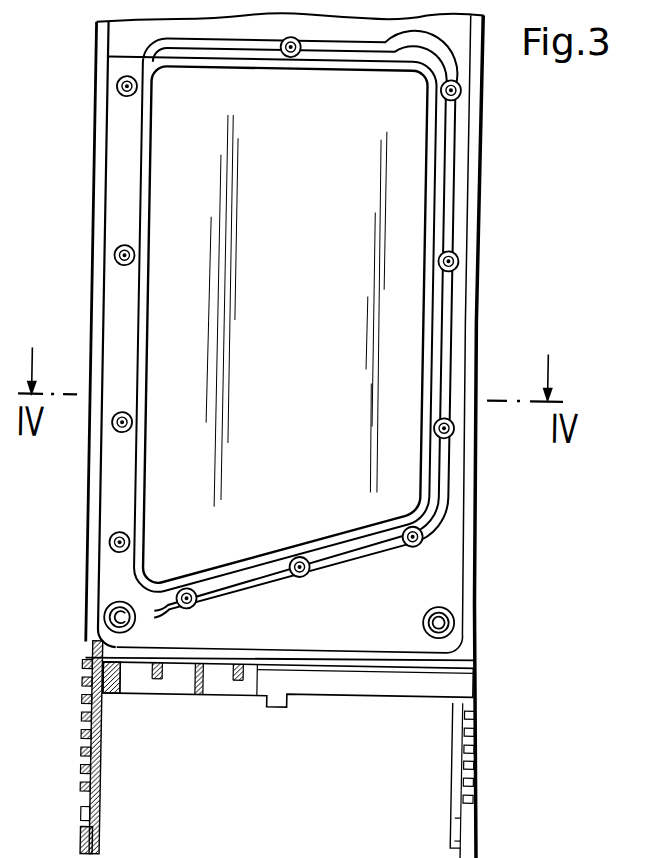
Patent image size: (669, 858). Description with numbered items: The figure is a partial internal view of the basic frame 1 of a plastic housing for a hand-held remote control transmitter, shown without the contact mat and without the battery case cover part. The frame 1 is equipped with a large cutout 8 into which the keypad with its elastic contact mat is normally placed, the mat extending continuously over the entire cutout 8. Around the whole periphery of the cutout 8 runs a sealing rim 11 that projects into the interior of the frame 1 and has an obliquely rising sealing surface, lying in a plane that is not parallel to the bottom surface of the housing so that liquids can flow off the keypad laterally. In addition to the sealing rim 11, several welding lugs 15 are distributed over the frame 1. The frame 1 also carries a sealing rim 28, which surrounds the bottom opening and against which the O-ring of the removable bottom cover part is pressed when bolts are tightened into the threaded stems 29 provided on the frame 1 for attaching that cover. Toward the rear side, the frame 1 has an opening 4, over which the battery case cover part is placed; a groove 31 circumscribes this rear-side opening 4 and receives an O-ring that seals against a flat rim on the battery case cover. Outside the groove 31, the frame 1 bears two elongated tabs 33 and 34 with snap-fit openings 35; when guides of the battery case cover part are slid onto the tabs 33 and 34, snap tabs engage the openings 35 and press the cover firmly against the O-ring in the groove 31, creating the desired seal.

The basic frame 1 is at (448, 567).
The rear-side opening 4 is at (370, 683).
The cutout 8 is at (300, 197).
The sealing rim 11 is at (140, 336).
The welding lugs 15 is at (112, 87).
The sealing rim 28 is at (100, 584).
The threaded stems 29 is at (109, 614).
The groove 31 is at (113, 690).
The elongated tab 33 is at (92, 741).
The elongated tab 34 is at (474, 838).
The snap-fit openings 35 is at (93, 817).